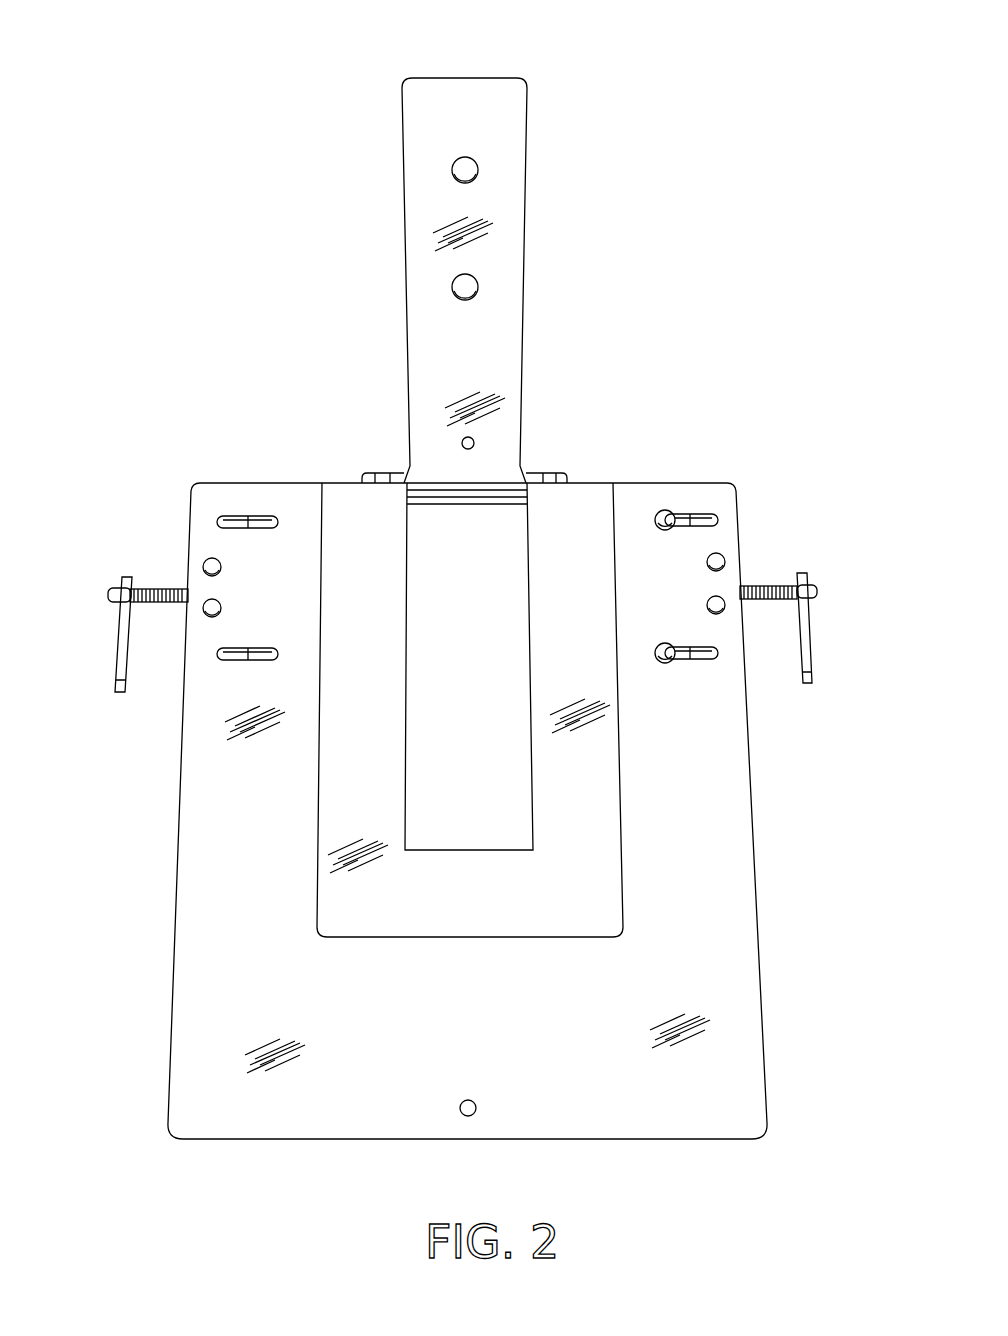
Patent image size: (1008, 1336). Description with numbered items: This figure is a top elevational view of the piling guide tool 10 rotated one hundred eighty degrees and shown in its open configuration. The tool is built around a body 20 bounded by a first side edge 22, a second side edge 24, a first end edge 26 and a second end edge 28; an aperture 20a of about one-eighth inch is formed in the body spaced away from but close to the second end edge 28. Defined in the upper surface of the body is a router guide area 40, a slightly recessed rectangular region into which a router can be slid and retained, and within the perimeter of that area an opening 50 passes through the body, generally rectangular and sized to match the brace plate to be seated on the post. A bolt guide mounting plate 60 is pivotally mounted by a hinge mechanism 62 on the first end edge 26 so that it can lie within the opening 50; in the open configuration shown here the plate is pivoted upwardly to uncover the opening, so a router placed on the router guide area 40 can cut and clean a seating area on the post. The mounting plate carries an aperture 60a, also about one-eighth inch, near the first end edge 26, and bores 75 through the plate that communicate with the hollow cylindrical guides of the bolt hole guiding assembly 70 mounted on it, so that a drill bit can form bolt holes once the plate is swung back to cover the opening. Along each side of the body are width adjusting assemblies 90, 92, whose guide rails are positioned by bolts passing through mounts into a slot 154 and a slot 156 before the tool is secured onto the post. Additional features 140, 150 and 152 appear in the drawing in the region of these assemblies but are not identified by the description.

The piling guide tool 10 is at (340, 330).
The body 20 is at (465, 791).
The aperture 20a is at (462, 1115).
The first side edge 22 is at (755, 834).
The second side edge 24 is at (177, 866).
The first end edge 26 is at (642, 481).
The second end edge 28 is at (667, 1141).
The router guide area 40 is at (488, 908).
The opening 50 is at (487, 668).
The bolt guide mounting plate 60 is at (490, 358).
The aperture 60a is at (474, 440).
The hinge mechanism 62 is at (385, 472).
The bolt hole guiding assembly 70 is at (553, 105).
The bore 75 is at (478, 168).
The width adjusting assembly 90 is at (770, 568).
The width adjusting assembly 92 is at (163, 545).
The clamp handle 140 is at (118, 638).
The upper pivot 150 is at (670, 514).
The lower pivot 152 is at (672, 660).
The slot 154 is at (230, 516).
The slot 156 is at (220, 656).